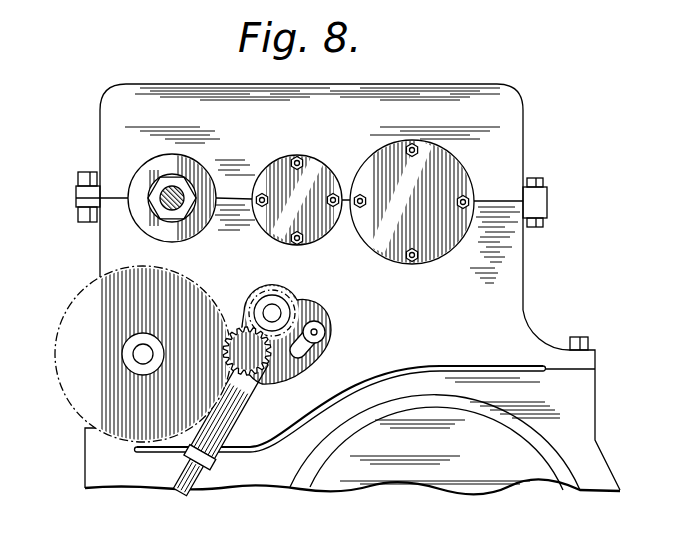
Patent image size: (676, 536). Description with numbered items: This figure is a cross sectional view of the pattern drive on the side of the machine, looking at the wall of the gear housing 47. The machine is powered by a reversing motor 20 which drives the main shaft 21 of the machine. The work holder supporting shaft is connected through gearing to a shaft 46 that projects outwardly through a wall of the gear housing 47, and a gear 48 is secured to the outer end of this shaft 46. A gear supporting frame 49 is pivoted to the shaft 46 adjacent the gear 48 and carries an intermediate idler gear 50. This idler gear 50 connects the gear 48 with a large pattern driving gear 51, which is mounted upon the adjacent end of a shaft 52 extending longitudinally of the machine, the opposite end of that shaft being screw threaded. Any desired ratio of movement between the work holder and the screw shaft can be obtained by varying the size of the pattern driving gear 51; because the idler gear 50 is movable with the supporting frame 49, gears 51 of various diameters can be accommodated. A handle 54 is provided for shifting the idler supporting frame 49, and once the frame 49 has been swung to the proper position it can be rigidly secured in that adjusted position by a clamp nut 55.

The reversing motor 20 is at (365, 428).
The main shaft 21 is at (186, 186).
The shaft 46 is at (276, 310).
The gear housing 47 is at (497, 268).
The gear 48 is at (309, 323).
The gear supporting frame 49 is at (229, 424).
The intermediate idler gear 50 is at (263, 363).
The pattern driving gear 51 is at (130, 352).
The shaft 52 is at (146, 346).
The handle 54 is at (213, 462).
The clamp nut 55 is at (326, 331).